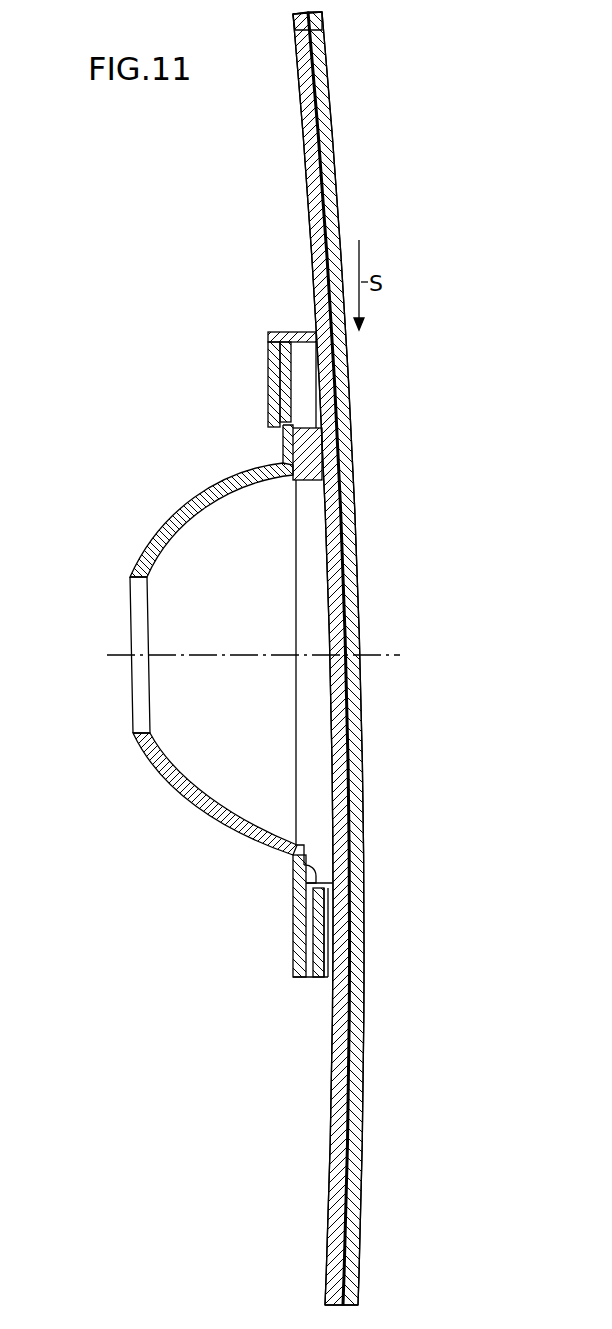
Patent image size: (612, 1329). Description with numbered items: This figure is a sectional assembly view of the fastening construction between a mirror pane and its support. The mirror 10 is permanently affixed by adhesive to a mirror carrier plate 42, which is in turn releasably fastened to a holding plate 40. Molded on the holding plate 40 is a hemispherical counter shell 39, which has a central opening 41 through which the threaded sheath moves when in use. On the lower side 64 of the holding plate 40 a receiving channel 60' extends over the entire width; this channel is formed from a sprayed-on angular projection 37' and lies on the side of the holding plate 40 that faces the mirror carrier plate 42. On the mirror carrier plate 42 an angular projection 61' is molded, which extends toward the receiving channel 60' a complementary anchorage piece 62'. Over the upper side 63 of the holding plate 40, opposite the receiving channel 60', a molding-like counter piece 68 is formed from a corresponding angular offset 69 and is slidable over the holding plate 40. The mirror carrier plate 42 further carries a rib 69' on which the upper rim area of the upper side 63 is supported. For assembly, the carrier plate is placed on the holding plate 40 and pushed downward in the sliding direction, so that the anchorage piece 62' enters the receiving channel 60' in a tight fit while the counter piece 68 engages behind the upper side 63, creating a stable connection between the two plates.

The mirror pane 10 is at (322, 152).
The mirror carrier plate 42 is at (301, 128).
The angular offset 69 is at (289, 339).
The upper side 63 is at (268, 338).
The counter piece 68 is at (268, 367).
The holding plate 40 is at (272, 402).
The rib 69' is at (364, 452).
The counter shell 39 is at (186, 503).
The central opening 41 is at (124, 612).
The angular projection 61' is at (258, 864).
The anchorage piece 62' is at (256, 916).
The receiving channel 60' is at (306, 968).
The angular projection 37' is at (376, 931).
The lower side 64 is at (304, 967).